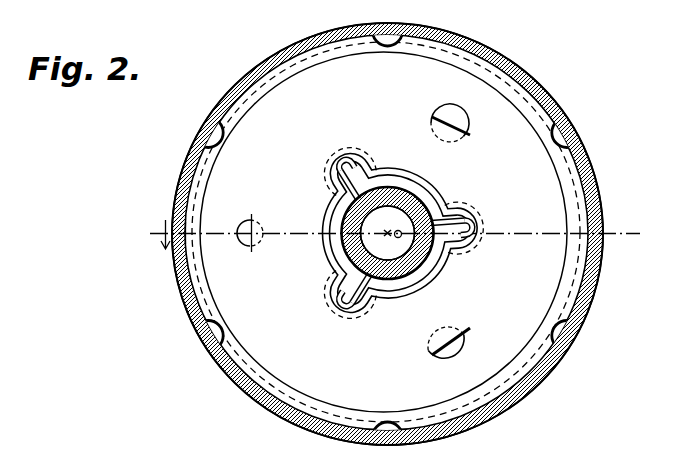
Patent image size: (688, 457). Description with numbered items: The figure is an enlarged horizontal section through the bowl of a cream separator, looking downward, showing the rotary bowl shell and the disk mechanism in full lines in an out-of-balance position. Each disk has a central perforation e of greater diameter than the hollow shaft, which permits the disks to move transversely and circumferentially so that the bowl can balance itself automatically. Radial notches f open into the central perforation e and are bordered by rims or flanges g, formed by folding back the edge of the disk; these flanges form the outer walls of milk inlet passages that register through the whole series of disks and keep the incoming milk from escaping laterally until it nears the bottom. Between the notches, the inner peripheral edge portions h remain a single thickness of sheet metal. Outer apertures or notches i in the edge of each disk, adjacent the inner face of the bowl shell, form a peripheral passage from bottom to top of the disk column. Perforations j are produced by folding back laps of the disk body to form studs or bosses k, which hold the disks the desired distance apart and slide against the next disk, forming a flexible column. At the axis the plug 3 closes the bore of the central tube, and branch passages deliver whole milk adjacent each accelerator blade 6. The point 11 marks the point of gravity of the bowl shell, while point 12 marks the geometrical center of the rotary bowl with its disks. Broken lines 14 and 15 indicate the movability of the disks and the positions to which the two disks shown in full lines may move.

The plug 3 is at (386, 233).
The accelerator blade 6 is at (328, 186).
The point of gravity of the bowl shell 11 is at (396, 240).
The geometrical center of the rotary bowl 12 is at (392, 231).
The broken line 14 is at (257, 402).
The broken line 15 is at (248, 81).
The central perforation e is at (428, 202).
The radial notch f is at (349, 160).
The rim or flange g is at (333, 166).
The inner peripheral edge portion h is at (424, 184).
The outer aperture or notch i is at (395, 38).
The perforation j is at (453, 117).
The stud or boss k is at (467, 133).